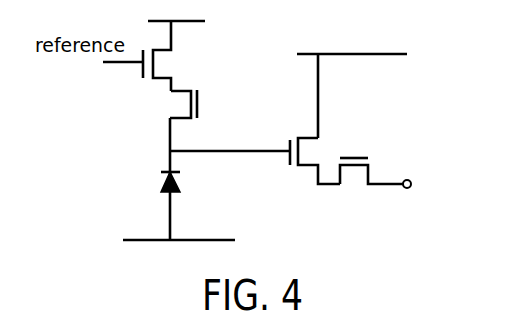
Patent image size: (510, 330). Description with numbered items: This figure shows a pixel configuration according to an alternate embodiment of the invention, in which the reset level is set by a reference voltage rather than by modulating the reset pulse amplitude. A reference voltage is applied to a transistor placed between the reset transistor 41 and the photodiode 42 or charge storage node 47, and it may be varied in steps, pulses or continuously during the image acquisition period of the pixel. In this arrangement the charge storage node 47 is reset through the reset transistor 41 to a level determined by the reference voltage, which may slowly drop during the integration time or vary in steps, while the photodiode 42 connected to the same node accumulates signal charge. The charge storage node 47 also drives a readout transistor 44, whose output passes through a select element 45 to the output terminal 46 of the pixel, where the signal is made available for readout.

The reset transistor 41 is at (207, 109).
The photodiode 42 is at (189, 191).
The readout transistor 44 is at (293, 161).
The select element 45 is at (370, 158).
The output terminal 46 is at (417, 201).
The charge storage node 47 is at (206, 147).